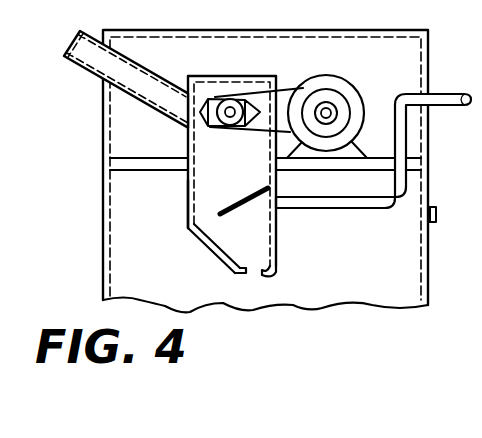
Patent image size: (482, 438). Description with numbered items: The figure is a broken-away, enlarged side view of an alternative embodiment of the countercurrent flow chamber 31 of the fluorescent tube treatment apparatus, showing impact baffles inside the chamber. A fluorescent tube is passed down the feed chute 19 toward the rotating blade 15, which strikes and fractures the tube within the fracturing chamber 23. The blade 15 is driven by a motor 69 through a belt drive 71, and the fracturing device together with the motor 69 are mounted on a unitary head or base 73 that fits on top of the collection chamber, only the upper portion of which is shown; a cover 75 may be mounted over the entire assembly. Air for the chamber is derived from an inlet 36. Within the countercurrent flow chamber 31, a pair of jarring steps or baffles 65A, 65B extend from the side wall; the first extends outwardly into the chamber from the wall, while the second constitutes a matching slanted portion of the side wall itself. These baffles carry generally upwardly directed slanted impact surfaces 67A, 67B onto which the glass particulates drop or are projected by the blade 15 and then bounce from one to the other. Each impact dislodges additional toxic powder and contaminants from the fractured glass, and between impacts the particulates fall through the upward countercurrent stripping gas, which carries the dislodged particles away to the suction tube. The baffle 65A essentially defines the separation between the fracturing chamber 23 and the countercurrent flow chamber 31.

The rotating blade 15 is at (209, 100).
The feed chute 19 is at (92, 60).
The fracturing chamber 23 is at (248, 164).
The countercurrent flow chamber 31 is at (205, 258).
The inlet 36 is at (437, 214).
The jarring step or baffle 65A is at (230, 214).
The jarring step or baffle 65B is at (232, 232).
The impact surface 67A is at (238, 192).
The impact surface 67B is at (205, 258).
The motor 69 is at (340, 80).
The belt drive 71 is at (282, 93).
The unitary head or base 73 is at (160, 157).
The cover 75 is at (330, 31).